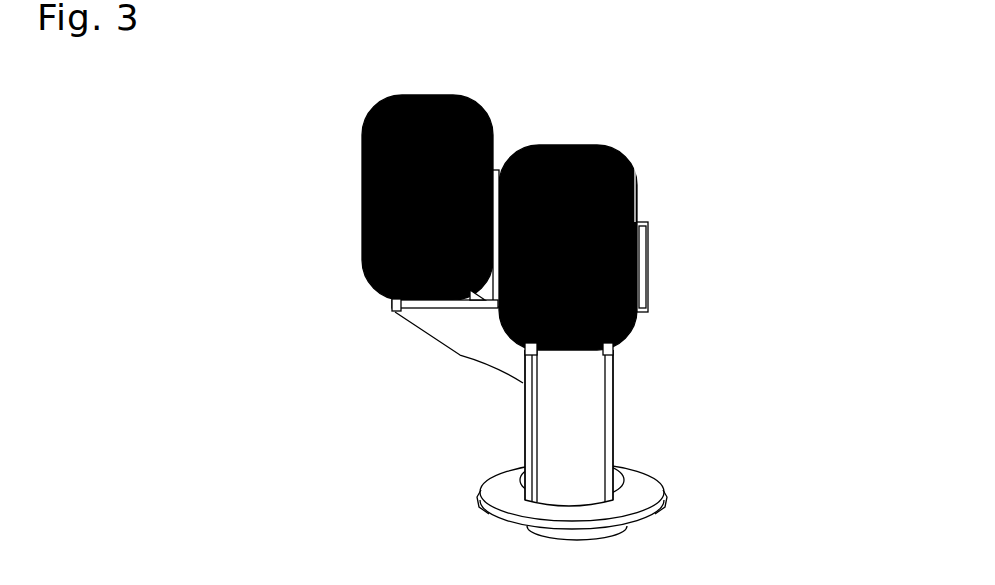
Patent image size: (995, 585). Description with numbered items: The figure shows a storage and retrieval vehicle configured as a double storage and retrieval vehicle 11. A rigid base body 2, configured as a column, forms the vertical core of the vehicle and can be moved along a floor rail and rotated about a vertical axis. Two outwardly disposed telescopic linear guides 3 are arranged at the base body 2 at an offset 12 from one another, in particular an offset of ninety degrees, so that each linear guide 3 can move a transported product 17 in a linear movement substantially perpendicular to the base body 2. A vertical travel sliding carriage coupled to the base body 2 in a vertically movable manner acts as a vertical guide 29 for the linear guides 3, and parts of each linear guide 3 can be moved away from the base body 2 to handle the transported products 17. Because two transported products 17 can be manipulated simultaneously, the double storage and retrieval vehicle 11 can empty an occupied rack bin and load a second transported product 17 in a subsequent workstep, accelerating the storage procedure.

The double storage and retrieval vehicle 11 is at (653, 69).
The base body 2 is at (607, 410).
The linear guide 3 is at (390, 300).
The offset 12 is at (462, 356).
The transported product 17 is at (373, 110).
The vertical guide 29 is at (613, 348).